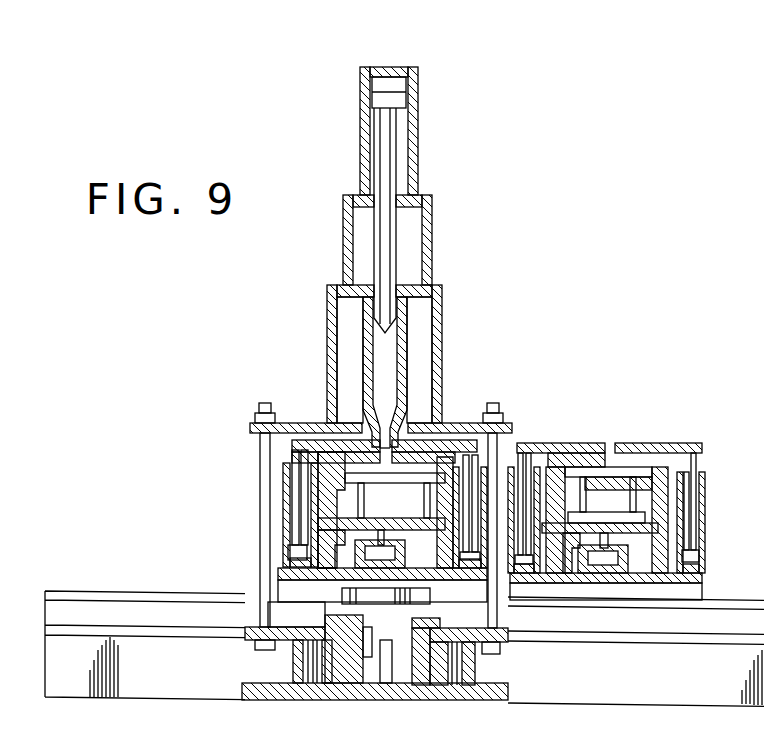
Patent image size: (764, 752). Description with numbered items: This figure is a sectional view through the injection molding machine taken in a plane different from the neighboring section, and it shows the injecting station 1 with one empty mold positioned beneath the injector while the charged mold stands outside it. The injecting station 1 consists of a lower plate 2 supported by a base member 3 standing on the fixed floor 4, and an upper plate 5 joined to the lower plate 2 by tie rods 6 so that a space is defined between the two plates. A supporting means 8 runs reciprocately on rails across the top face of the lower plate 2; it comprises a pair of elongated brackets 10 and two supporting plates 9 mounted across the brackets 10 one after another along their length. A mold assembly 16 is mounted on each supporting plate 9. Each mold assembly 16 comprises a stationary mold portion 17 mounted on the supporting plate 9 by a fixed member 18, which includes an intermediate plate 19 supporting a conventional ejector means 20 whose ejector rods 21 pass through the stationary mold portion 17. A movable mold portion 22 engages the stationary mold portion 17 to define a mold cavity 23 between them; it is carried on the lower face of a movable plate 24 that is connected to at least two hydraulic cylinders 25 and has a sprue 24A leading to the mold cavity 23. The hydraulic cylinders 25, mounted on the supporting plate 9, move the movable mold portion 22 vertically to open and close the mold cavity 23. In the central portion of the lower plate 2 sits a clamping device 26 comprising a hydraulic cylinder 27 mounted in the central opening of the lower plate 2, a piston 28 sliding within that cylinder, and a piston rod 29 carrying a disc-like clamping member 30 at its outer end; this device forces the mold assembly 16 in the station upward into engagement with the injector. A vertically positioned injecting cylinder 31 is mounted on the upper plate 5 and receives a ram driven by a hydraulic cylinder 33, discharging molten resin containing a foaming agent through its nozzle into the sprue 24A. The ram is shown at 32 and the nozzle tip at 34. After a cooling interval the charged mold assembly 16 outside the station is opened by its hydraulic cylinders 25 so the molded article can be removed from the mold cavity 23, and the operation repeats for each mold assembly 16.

The injecting station 1 is at (496, 440).
The lower plate 2 is at (248, 637).
The base member 3 is at (470, 670).
The fixed floor 4 is at (425, 693).
The upper plate 5 is at (445, 423).
The tie rods 6 is at (263, 489).
The supporting means 8 is at (757, 297).
The supporting plates 9 is at (285, 578).
The elongated brackets 10 is at (697, 597).
The mold assembly 16 is at (282, 449).
The stationary mold portion 17 is at (326, 493).
The fixed member 18 is at (306, 538).
The intermediate plate 19 is at (437, 549).
The ejector means 20 is at (634, 594).
The ejector rods 21 is at (360, 502).
The movable mold portion 22 is at (332, 445).
The mold cavity 23 is at (293, 462).
The movable plate 24 is at (460, 440).
The sprue 24A is at (357, 440).
The hydraulic cylinders 25 is at (296, 480).
The clamping device 26 is at (389, 700).
The hydraulic cylinder 27 is at (345, 684).
The piston 28 is at (320, 660).
The piston rod 29 is at (412, 630).
The clamping member 30 is at (345, 607).
The injecting cylinder 31 is at (408, 340).
The plunger rod 32 is at (397, 231).
The hydraulic cylinder 33 is at (418, 120).
The nozzle tip 34 is at (382, 438).